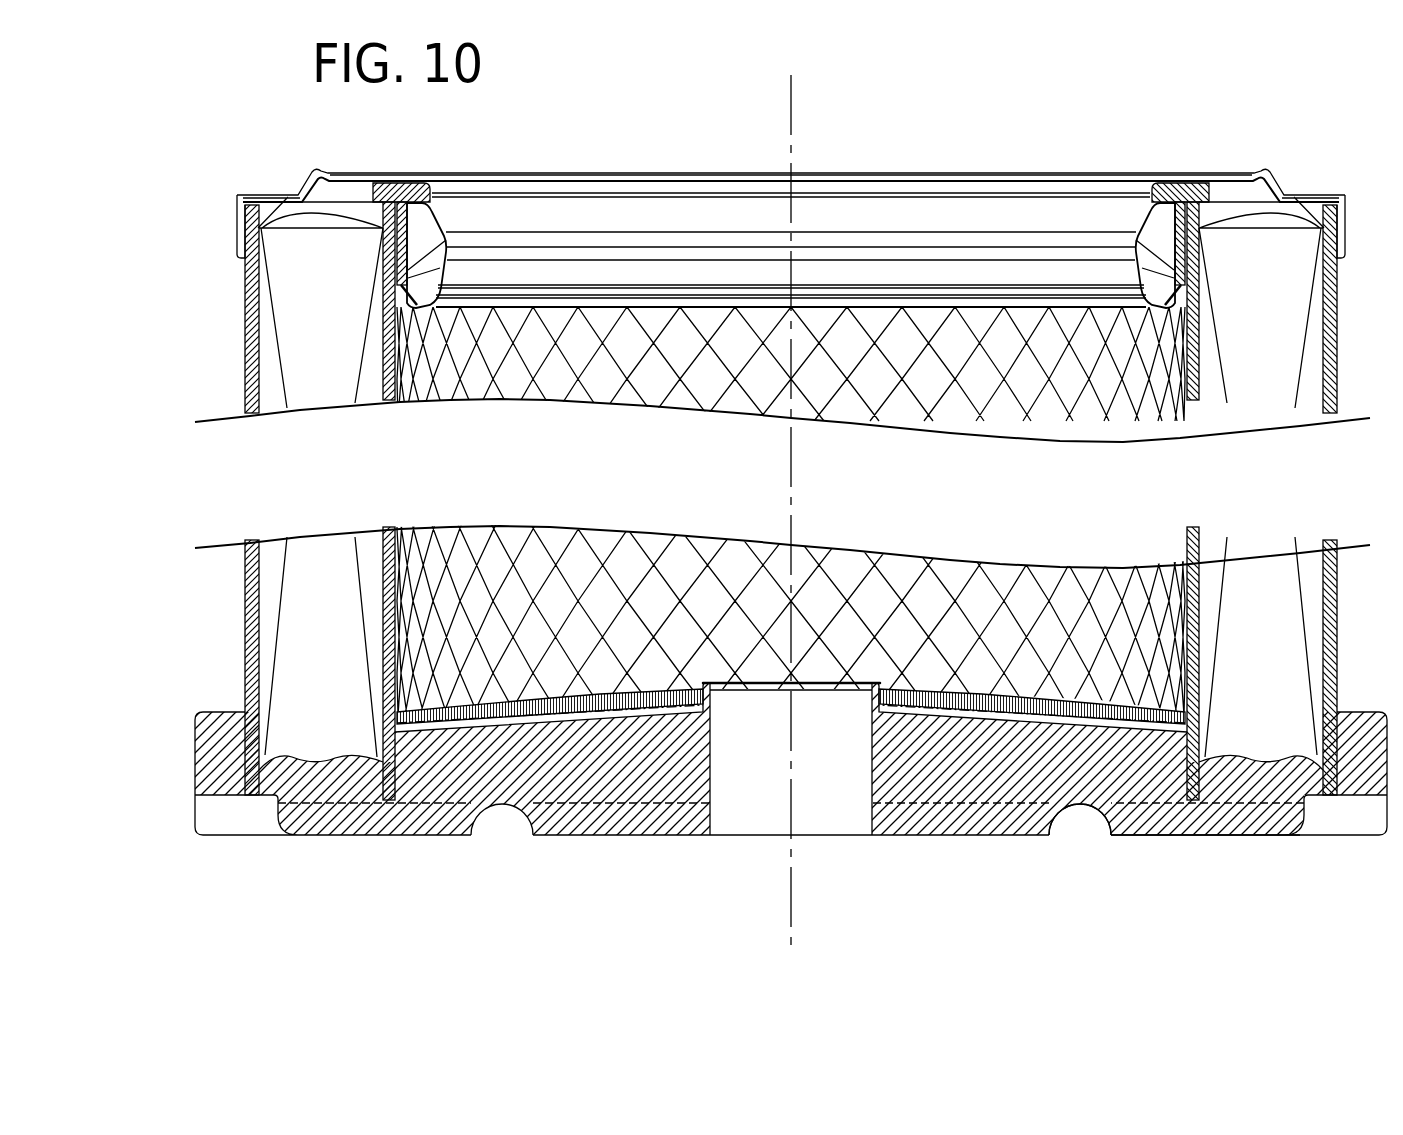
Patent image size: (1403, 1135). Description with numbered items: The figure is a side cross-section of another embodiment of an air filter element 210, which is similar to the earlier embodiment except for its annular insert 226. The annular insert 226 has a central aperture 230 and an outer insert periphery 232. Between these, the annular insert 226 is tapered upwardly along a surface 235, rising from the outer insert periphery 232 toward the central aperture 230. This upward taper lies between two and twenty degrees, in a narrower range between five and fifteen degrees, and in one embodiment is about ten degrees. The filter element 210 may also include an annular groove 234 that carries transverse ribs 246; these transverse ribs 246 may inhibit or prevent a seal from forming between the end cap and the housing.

The filter element 210 is at (188, 88).
The outer insert periphery 232 is at (410, 692).
The surface 235 is at (577, 708).
The central aperture 230 is at (717, 708).
The annular insert 226 is at (964, 700).
The transverse ribs 246 is at (1073, 815).
The annular groove 234 is at (1099, 840).